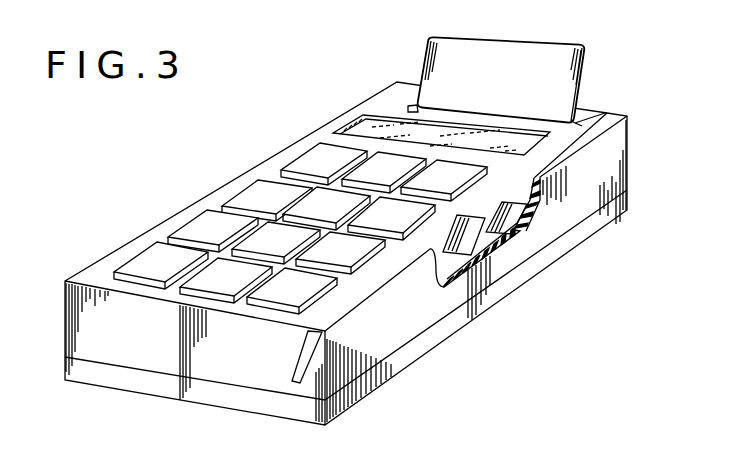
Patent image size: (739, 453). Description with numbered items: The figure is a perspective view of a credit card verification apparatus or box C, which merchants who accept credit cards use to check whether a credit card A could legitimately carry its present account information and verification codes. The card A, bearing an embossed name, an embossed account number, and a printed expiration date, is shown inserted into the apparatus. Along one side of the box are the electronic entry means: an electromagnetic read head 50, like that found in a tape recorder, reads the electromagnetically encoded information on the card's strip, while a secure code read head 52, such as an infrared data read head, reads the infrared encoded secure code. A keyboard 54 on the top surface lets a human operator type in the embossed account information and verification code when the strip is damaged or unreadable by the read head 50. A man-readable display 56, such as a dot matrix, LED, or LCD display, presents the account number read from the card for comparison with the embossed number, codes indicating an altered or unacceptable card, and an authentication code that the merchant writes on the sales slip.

The credit card verification apparatus C is at (276, 134).
The credit card A is at (483, 32).
The electromagnetic read head 50 is at (525, 228).
The secure code read head 52 is at (464, 235).
The keyboard 54 is at (243, 191).
The man-readable display 56 is at (381, 126).